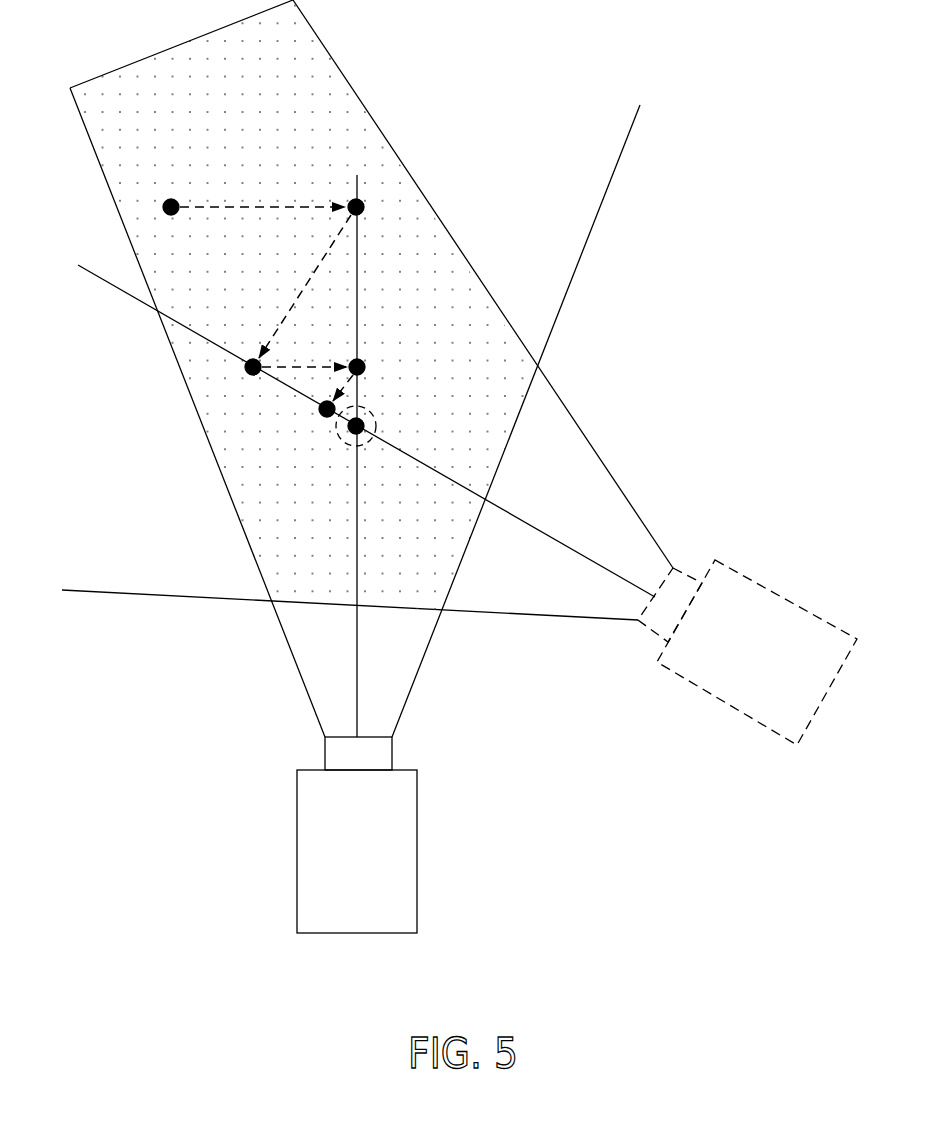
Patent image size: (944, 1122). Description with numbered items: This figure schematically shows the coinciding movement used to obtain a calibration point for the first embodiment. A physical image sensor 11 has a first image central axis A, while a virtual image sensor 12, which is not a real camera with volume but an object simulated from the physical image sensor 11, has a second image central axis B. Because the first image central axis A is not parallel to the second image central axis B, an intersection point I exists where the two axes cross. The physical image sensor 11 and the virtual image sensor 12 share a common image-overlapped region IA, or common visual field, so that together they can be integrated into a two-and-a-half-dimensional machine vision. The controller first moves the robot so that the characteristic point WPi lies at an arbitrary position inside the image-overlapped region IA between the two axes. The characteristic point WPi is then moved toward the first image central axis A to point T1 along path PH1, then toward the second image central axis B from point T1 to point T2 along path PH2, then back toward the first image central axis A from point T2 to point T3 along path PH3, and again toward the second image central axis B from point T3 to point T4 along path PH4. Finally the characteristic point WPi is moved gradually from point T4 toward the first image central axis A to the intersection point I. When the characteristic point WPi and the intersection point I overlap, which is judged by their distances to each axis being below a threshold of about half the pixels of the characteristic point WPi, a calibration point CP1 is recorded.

The physical image sensor 11 is at (395, 843).
The virtual image sensor 12 is at (737, 590).
The first image central axis A is at (358, 582).
The second image central axis B is at (498, 508).
The image-overlapped region IA is at (410, 244).
The characteristic point WPi is at (168, 193).
The point T1 is at (362, 200).
The point T2 is at (245, 366).
The point T3 is at (362, 362).
The point T4 is at (318, 412).
The intersection point I is at (367, 420).
The calibration point CP1 is at (341, 438).
The path PH1 is at (263, 208).
The path PH2 is at (292, 308).
The path PH3 is at (290, 367).
The path PH4 is at (350, 382).